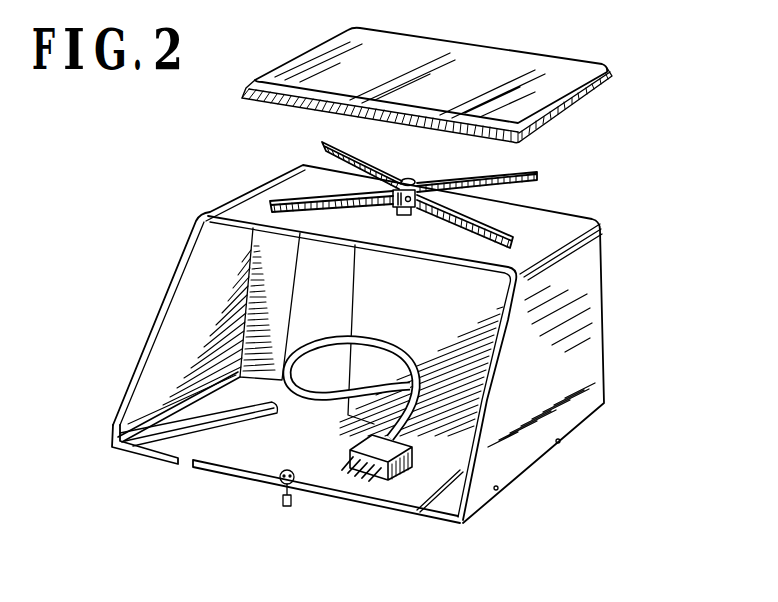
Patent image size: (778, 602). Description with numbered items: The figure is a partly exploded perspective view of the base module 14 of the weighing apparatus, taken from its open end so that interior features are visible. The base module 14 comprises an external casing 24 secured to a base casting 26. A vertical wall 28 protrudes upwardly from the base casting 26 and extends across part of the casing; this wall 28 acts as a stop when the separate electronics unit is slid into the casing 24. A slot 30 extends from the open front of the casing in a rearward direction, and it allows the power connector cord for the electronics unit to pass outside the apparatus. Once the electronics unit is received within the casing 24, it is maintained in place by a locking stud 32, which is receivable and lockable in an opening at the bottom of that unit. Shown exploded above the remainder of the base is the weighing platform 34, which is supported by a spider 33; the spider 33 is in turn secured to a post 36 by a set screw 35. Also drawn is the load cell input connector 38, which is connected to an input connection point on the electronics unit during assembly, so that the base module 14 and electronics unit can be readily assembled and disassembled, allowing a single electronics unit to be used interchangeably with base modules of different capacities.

The base module 14 is at (611, 320).
The external casing 24 is at (560, 381).
The base casting 26 is at (247, 448).
The vertical wall 28 is at (468, 304).
The slot 30 is at (183, 462).
The locking stud 32 is at (273, 483).
The spider 33 is at (497, 172).
The weighing platform 34 is at (527, 70).
The set screw 35 is at (411, 181).
The post 36 is at (407, 216).
The load cell input connector 38 is at (413, 462).